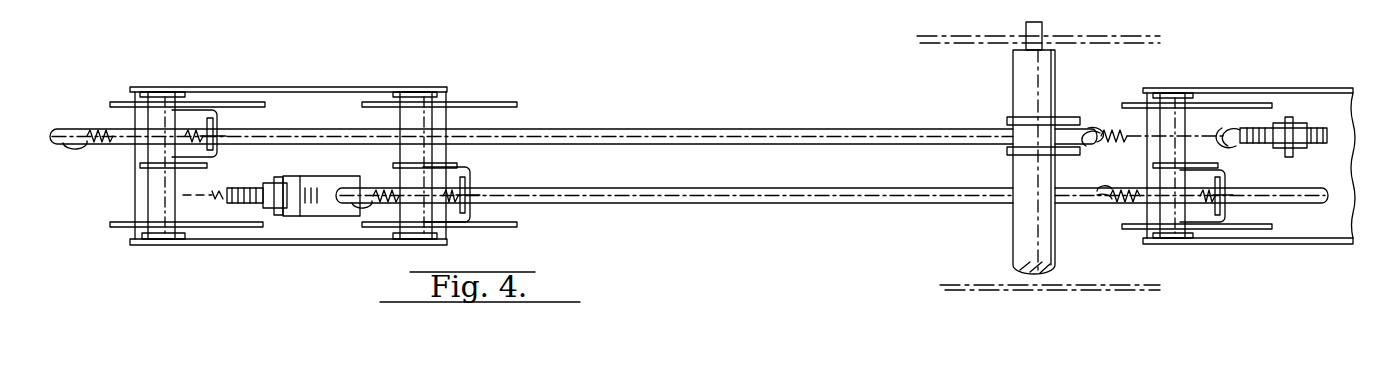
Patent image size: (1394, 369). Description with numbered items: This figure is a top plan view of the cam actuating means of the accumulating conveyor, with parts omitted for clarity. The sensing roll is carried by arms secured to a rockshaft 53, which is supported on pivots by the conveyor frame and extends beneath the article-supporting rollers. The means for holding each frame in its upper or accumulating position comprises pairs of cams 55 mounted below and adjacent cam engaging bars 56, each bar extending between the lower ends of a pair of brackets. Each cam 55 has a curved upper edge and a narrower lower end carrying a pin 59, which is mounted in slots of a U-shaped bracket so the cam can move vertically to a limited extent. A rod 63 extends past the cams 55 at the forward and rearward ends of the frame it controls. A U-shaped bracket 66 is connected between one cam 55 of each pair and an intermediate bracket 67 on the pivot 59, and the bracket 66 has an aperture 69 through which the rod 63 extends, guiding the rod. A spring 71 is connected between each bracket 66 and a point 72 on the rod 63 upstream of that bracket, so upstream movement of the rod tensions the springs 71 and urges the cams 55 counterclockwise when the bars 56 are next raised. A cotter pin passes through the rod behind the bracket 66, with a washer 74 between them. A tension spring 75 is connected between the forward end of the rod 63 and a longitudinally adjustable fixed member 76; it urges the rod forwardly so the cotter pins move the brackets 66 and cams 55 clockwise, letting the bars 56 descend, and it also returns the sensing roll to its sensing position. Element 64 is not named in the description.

The rockshaft 53 is at (1040, 68).
The cam 55 is at (473, 228).
The cam engaging bar 56 is at (420, 118).
The pin 59 is at (1170, 217).
The rod 63 is at (803, 134).
The collar 64 is at (1067, 150).
The U-shaped bracket 66 is at (1230, 178).
The intermediate bracket 67 is at (1200, 162).
The aperture 69 is at (230, 118).
The spring 71 is at (105, 146).
The point on rod 72 is at (350, 187).
The washer 74 is at (210, 118).
The tension spring 75 is at (1120, 127).
The longitudinally adjustable fixed member 76 is at (1312, 127).